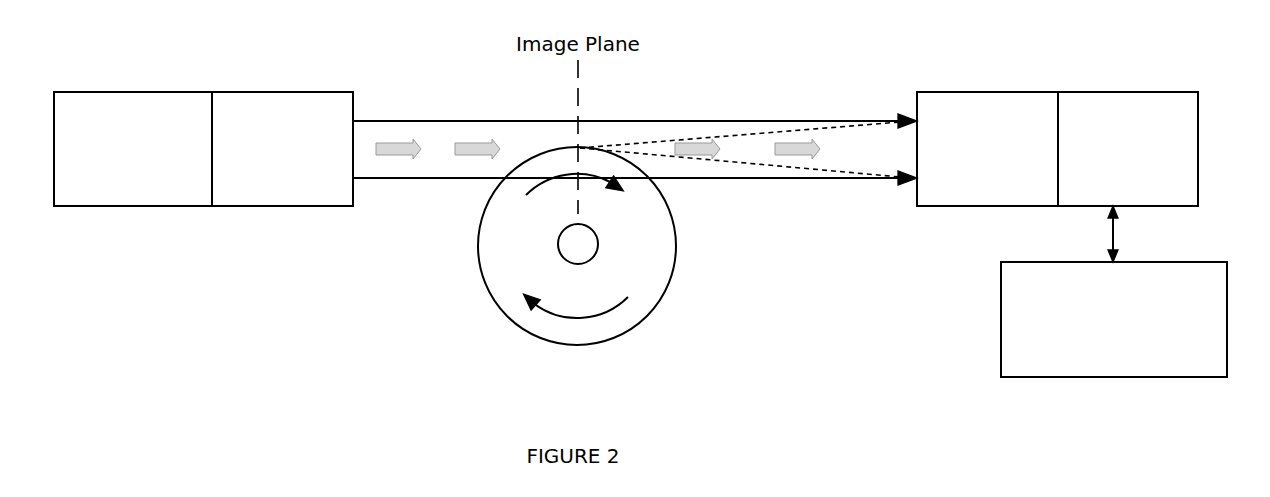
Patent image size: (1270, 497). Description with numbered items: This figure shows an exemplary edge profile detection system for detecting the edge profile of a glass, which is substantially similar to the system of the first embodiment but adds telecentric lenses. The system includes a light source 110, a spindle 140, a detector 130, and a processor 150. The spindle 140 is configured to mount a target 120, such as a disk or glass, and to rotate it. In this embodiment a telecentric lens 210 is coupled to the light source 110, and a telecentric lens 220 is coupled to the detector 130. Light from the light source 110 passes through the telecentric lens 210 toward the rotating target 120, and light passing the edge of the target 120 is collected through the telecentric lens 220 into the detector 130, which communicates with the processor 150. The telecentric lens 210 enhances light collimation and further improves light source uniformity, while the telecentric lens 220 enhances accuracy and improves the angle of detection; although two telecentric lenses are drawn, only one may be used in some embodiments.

The light source 110 is at (113, 174).
The telecentric lens 210 is at (263, 189).
The telecentric lens 220 is at (968, 189).
The detector 130 is at (1108, 174).
The processor 150 is at (1093, 345).
The target 120 is at (578, 362).
The spindle 140 is at (578, 246).